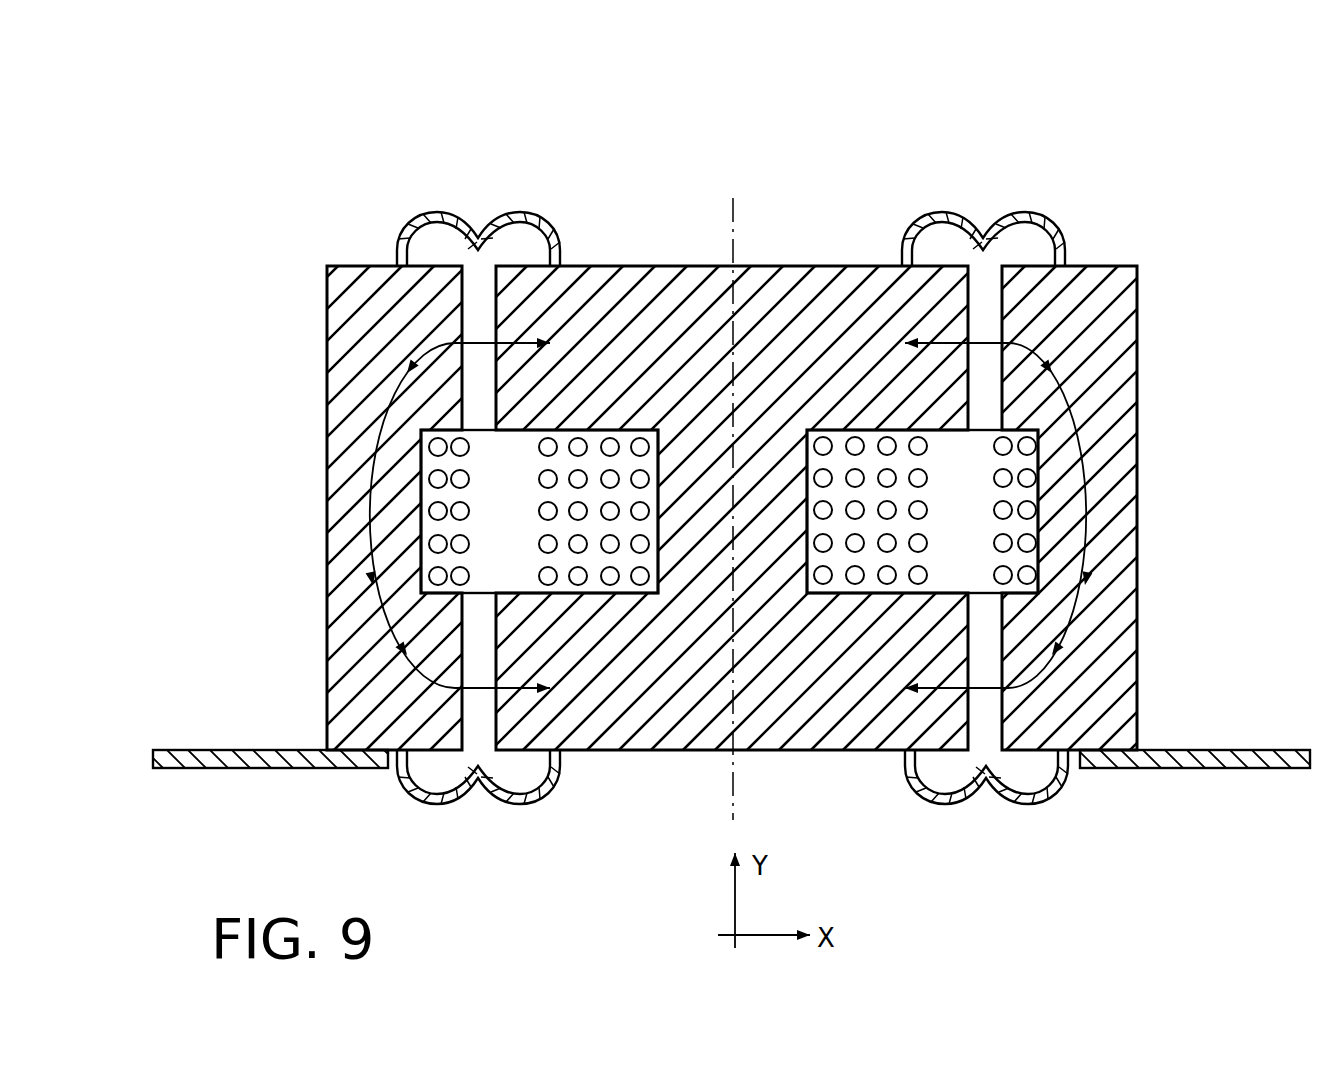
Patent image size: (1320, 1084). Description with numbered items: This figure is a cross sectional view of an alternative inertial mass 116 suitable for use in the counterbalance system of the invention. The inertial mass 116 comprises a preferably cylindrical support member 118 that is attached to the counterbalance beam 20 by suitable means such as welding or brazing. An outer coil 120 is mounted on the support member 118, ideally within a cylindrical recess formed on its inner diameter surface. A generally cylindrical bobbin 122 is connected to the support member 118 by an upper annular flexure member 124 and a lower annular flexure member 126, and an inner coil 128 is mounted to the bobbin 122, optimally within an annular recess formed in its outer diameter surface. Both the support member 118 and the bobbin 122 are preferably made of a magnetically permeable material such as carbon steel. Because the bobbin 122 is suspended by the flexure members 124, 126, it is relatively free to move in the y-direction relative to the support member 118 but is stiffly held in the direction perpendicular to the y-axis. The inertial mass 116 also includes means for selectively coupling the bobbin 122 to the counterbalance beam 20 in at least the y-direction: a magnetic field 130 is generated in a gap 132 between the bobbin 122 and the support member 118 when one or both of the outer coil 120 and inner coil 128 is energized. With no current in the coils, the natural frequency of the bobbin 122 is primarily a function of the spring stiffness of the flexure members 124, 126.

The inertial mass 116 is at (1040, 148).
The support member 118 is at (1106, 266).
The outer coil 120 is at (990, 436).
The bobbin 122 is at (762, 266).
The upper annular flexure member 124 is at (1034, 213).
The lower annular flexure member 126 is at (1048, 800).
The inner coil 128 is at (612, 430).
The magnetic field 130 is at (367, 500).
The gap 132 is at (477, 740).
The counterbalance beam 20 is at (1204, 748).